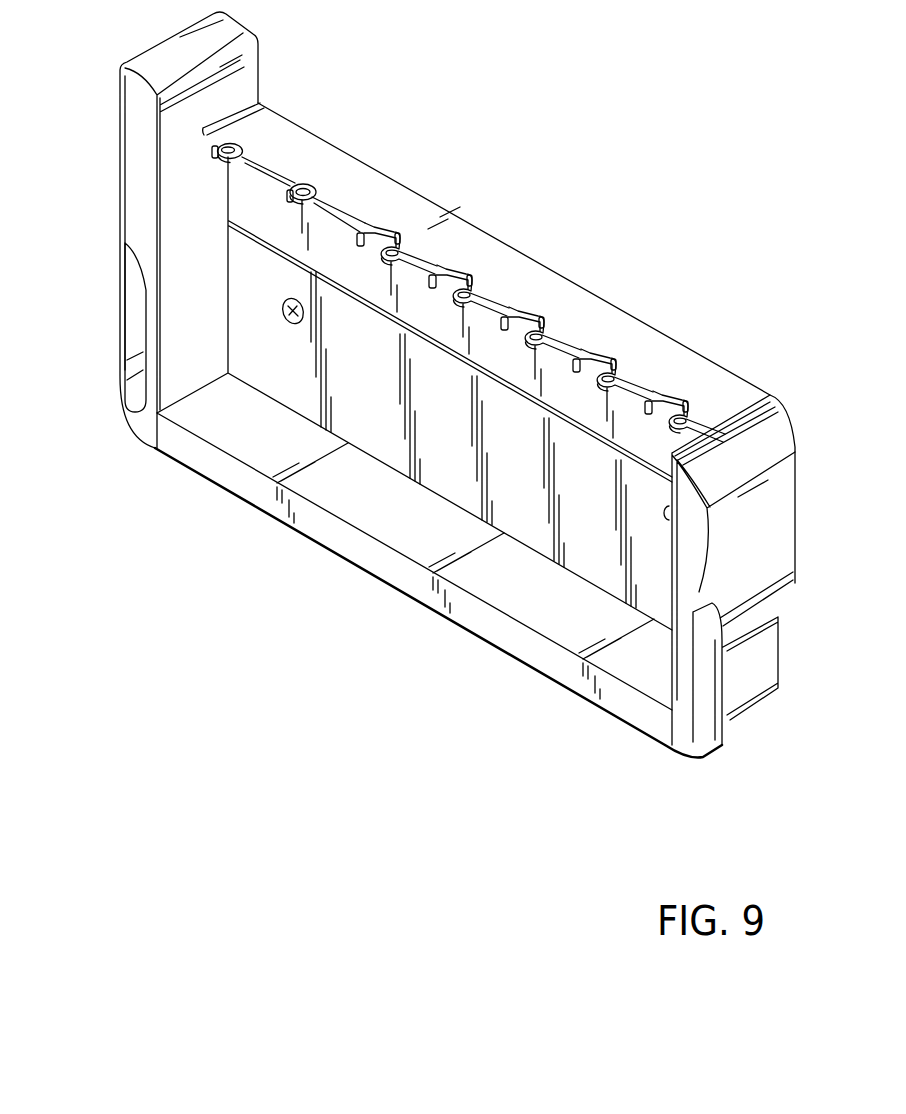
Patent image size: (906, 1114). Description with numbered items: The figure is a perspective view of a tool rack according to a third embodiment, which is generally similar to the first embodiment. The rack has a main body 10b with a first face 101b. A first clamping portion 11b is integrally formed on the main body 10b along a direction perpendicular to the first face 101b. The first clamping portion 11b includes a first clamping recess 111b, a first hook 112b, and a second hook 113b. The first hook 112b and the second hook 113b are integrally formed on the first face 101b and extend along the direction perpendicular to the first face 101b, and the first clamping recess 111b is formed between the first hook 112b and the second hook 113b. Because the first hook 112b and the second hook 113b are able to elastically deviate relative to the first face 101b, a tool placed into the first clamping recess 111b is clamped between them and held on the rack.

The main body 10b is at (506, 262).
The first face 101b is at (253, 214).
The first clamping portion 11b is at (233, 164).
The first clamping recess 111b is at (310, 203).
The first hook 112b is at (287, 197).
The second hook 113b is at (344, 214).